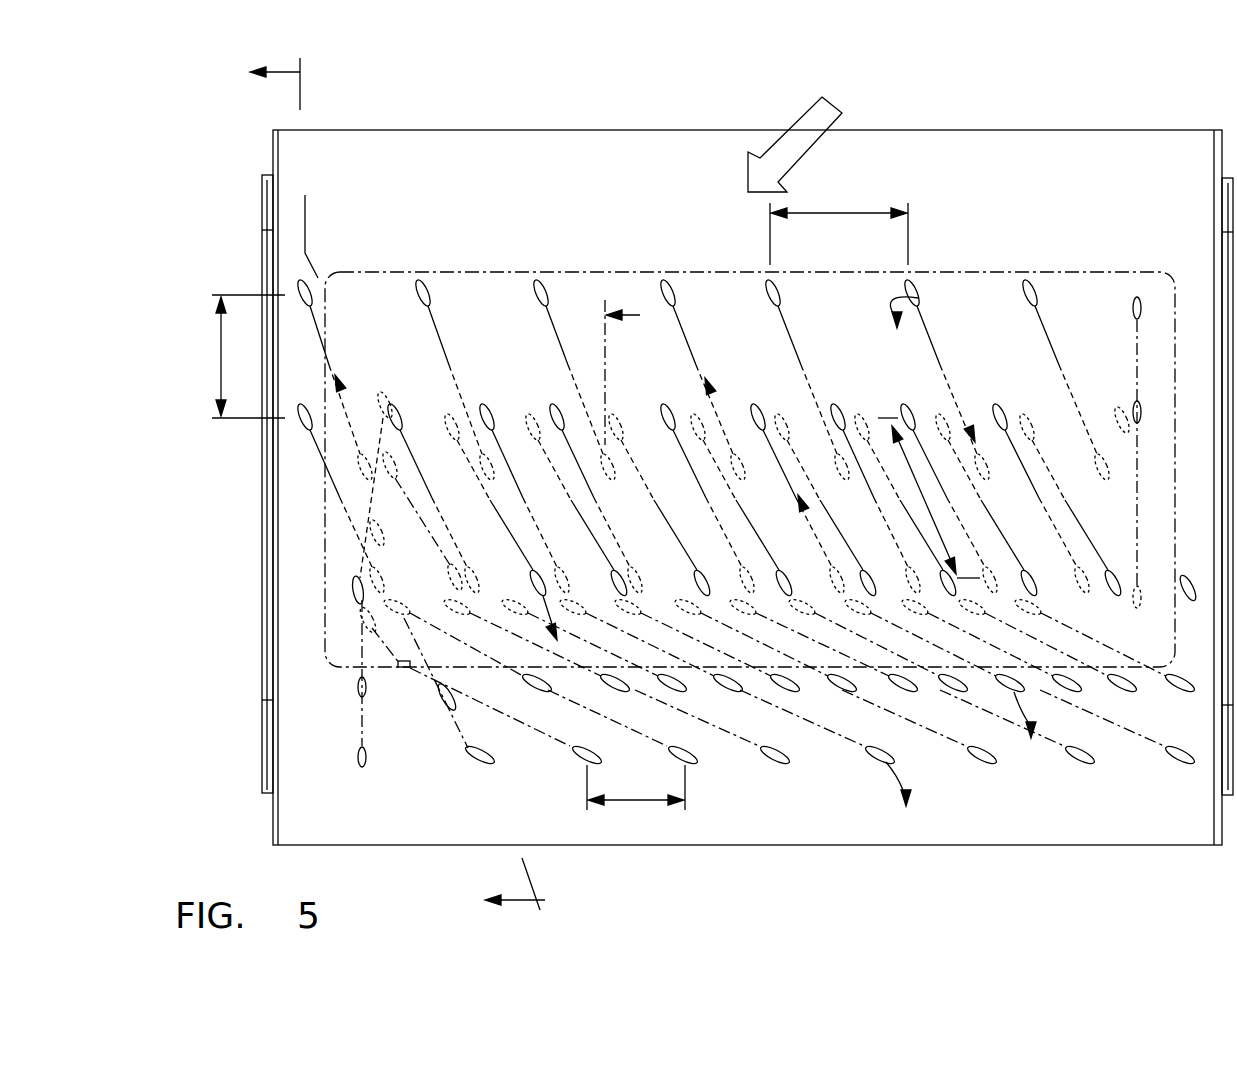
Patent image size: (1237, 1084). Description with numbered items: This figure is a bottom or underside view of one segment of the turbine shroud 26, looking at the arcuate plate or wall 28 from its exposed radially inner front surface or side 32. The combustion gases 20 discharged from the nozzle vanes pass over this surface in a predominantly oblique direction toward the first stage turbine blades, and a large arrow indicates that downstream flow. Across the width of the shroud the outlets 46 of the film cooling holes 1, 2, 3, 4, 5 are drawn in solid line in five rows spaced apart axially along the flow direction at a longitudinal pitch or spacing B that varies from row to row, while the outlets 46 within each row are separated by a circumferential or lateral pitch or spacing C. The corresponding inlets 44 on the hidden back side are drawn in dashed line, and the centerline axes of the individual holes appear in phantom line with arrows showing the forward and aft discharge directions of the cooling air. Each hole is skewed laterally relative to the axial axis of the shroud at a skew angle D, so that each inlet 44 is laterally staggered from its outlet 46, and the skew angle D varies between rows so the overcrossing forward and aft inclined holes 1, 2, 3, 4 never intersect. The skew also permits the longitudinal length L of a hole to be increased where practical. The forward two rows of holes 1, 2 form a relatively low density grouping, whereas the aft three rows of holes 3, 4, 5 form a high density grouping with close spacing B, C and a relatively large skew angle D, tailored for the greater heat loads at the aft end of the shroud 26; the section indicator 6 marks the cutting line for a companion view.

The combustion gases 20 is at (808, 112).
The turbine shroud 26 is at (1120, 138).
The arcuate plate or wall 28 is at (266, 735).
The radially inner front surface or side 32 is at (1066, 202).
The inlets 44 is at (1102, 460).
The outlets 46 is at (1028, 305).
The film cooling hole 1 is at (348, 392).
The film cooling hole 2 is at (340, 492).
The film cooling hole 3 is at (370, 505).
The film cooling hole 4 is at (432, 645).
The film cooling hole 5 is at (808, 716).
The longitudinal pitch or spacing B is at (221, 345).
The circumferential or lateral pitch or spacing C is at (840, 213).
The skew angle D is at (546, 321).
The longitudinal length L is at (892, 424).
The section line 6- 6 is at (381, 488).